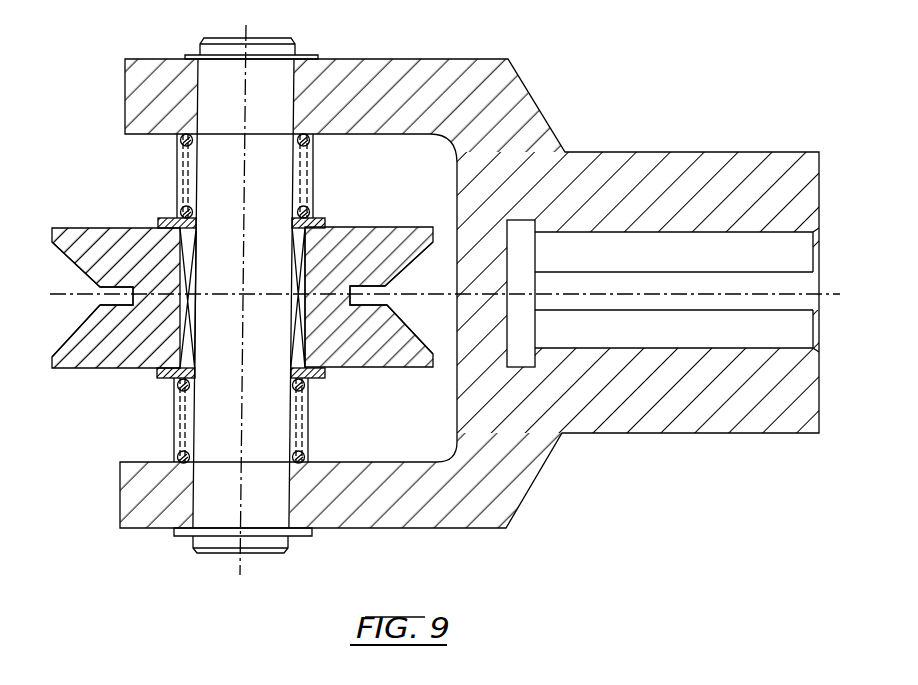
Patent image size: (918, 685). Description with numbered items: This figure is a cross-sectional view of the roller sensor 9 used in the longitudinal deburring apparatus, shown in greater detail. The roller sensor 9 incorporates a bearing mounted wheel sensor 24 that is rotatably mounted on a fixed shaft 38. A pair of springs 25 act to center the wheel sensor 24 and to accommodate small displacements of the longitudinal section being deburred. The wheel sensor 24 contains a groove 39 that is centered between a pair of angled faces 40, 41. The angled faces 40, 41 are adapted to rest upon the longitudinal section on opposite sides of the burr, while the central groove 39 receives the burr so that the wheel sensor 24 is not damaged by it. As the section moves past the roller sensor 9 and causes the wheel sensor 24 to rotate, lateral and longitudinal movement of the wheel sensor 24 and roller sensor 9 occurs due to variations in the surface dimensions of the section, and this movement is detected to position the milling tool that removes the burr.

The roller sensor 9 is at (430, 72).
The fixed shaft 38 is at (268, 80).
The wheel sensor 24 is at (122, 350).
The springs 25 is at (177, 172).
The angled face 40 is at (82, 264).
The groove 39 is at (108, 300).
The angled face 41 is at (75, 334).